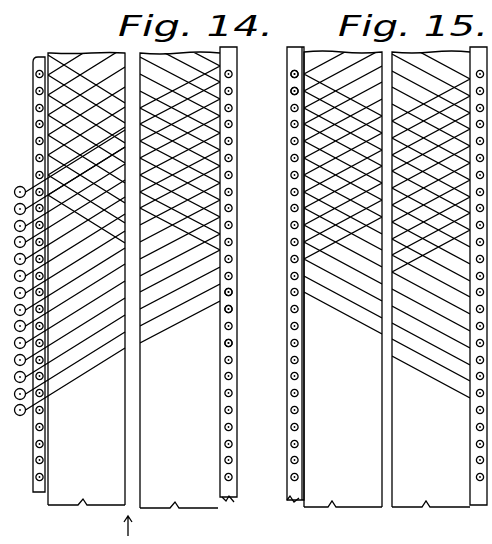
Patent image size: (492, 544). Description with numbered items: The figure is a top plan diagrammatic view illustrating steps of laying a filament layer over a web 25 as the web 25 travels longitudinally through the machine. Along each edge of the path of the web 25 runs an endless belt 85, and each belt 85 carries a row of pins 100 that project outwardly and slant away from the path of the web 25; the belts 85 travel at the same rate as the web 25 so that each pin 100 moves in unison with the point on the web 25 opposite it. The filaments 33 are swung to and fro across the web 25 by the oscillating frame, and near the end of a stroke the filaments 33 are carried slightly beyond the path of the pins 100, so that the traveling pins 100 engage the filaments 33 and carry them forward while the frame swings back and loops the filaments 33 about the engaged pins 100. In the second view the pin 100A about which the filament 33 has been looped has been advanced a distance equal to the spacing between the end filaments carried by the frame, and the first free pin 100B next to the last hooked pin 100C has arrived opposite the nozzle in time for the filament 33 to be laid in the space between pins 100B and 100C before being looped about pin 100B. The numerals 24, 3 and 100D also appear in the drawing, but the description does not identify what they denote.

In FIG. 14, the fastening element 24 is at (28, 2).
In FIG. 14, the eyelets 3 is at (32, 188).
In FIG. 14, the web 25 is at (158, 506).
In FIG. 15, the web 25 is at (310, 508).
In FIG. 15, the filaments 33 is at (290, 84).
In FIG. 14, the endless belts 85 is at (36, 502).
In FIG. 15, the endless belts 85 is at (286, 502).
In FIG. 14, the pins 100 is at (36, 476).
In FIG. 14, the pin 100A is at (36, 187).
In FIG. 15, the pin 100A is at (290, 74).
In FIG. 14, the first free pin 100B is at (232, 309).
In FIG. 14, the last hooked pin 100C is at (232, 291).
In FIG. 14, the lacing cord 100D is at (232, 343).